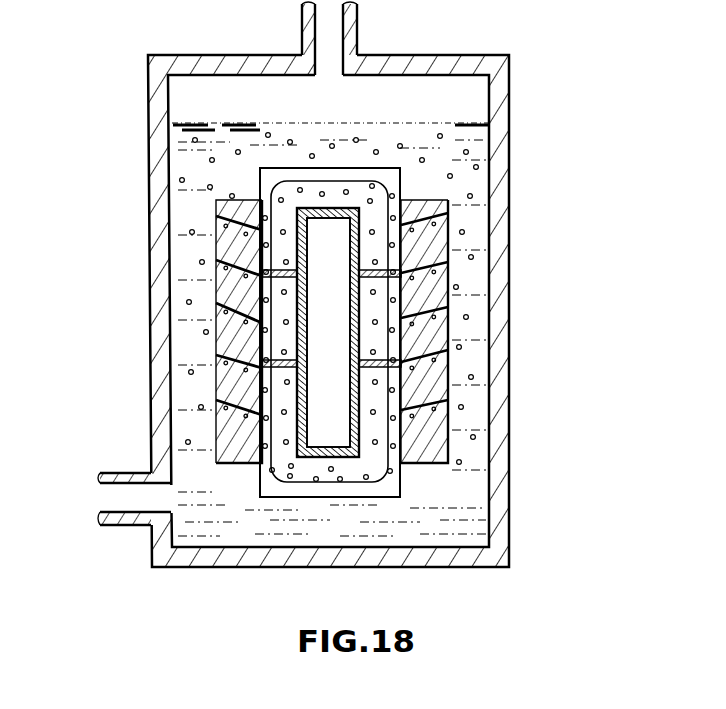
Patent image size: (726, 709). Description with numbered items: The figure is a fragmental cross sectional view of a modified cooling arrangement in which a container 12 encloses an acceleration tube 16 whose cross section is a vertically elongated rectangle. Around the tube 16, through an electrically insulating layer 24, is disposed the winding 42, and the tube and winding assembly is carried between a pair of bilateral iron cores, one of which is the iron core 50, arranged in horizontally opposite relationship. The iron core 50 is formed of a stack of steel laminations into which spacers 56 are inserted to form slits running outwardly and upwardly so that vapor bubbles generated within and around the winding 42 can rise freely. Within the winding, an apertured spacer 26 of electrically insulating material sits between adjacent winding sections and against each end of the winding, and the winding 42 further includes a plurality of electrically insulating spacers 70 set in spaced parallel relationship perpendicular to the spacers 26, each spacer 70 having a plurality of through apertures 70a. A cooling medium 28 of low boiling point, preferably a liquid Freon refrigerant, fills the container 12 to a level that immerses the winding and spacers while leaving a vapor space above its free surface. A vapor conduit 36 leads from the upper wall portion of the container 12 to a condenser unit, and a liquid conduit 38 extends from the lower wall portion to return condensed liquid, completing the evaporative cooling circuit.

The container 12 is at (502, 316).
The acceleration tube 16 is at (318, 458).
The electrically insulating layer 24 is at (331, 405).
The apertured spacer 26 is at (388, 484).
The cooling medium 28 is at (357, 135).
The vapor conduit 36 is at (357, 28).
The liquid conduit 38 is at (116, 473).
The winding 42 is at (327, 481).
The iron core 50 is at (216, 243).
The spacers 56 is at (216, 269).
The electrically insulating spacers 70 is at (300, 354).
The through apertures 70a is at (374, 284).